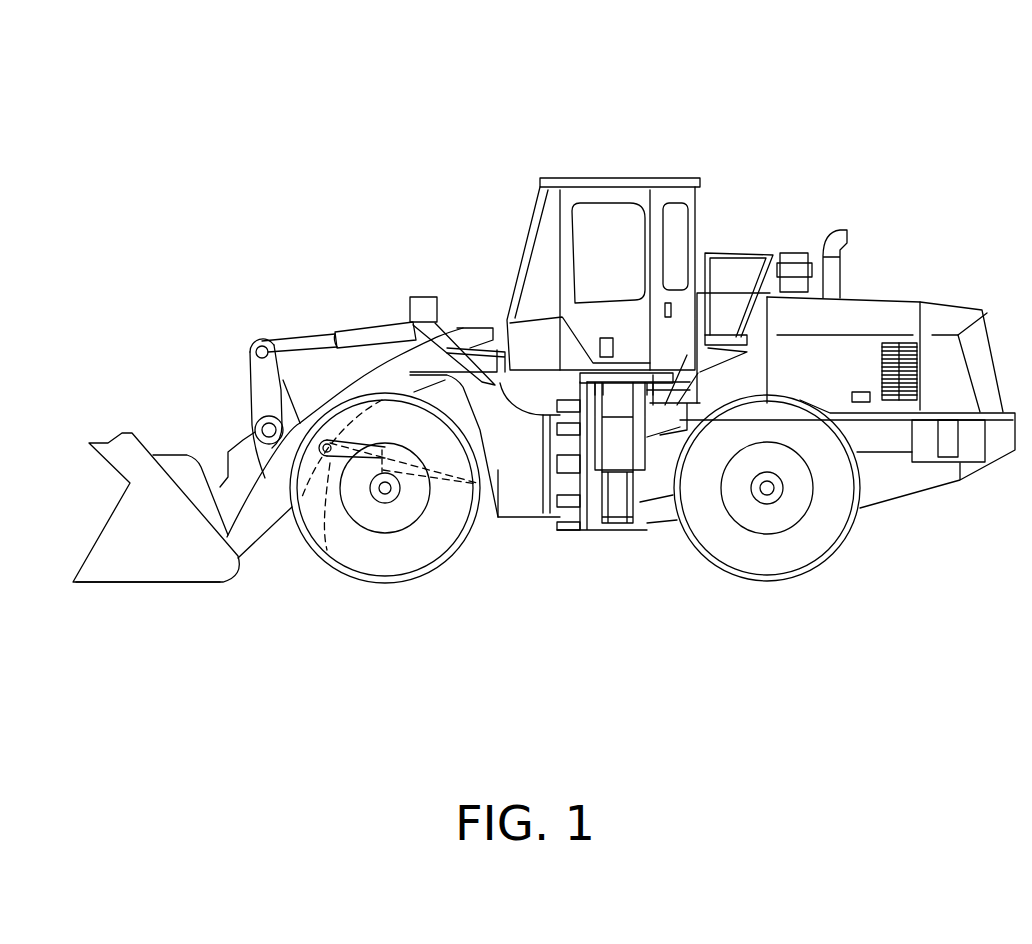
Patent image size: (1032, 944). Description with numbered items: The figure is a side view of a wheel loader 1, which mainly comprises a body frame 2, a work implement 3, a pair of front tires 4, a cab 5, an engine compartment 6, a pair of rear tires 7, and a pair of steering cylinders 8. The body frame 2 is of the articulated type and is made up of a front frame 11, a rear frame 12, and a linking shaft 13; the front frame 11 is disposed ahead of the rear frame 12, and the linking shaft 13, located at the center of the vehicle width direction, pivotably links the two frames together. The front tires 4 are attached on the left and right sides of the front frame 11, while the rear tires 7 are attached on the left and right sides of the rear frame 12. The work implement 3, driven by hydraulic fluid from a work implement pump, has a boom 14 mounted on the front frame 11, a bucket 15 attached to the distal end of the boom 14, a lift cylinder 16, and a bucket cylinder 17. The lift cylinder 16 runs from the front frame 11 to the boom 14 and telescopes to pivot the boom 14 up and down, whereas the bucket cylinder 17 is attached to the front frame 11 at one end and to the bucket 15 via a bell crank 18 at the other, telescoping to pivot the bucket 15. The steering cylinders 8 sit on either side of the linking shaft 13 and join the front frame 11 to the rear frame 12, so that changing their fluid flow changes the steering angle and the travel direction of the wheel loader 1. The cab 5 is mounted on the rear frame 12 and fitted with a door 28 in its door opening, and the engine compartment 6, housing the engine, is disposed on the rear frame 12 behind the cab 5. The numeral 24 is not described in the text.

The wheel loader 1 is at (825, 95).
The body frame 2 is at (618, 535).
The work implement 3 is at (153, 447).
The front tires 4 is at (398, 568).
The cab 5 is at (663, 183).
The engine compartment 6 is at (875, 298).
The rear tires 7 is at (778, 567).
The steering cylinders 8 is at (543, 513).
The front frame 11 is at (500, 503).
The rear frame 12 is at (652, 518).
The linking shaft 13 is at (568, 527).
The boom 14 is at (300, 427).
The bucket 15 is at (122, 518).
The lift cylinder 16 is at (327, 568).
The bucket cylinder 17 is at (350, 340).
The bell crank 18 is at (260, 402).
The front window 24 is at (542, 253).
The door 28 is at (605, 232).